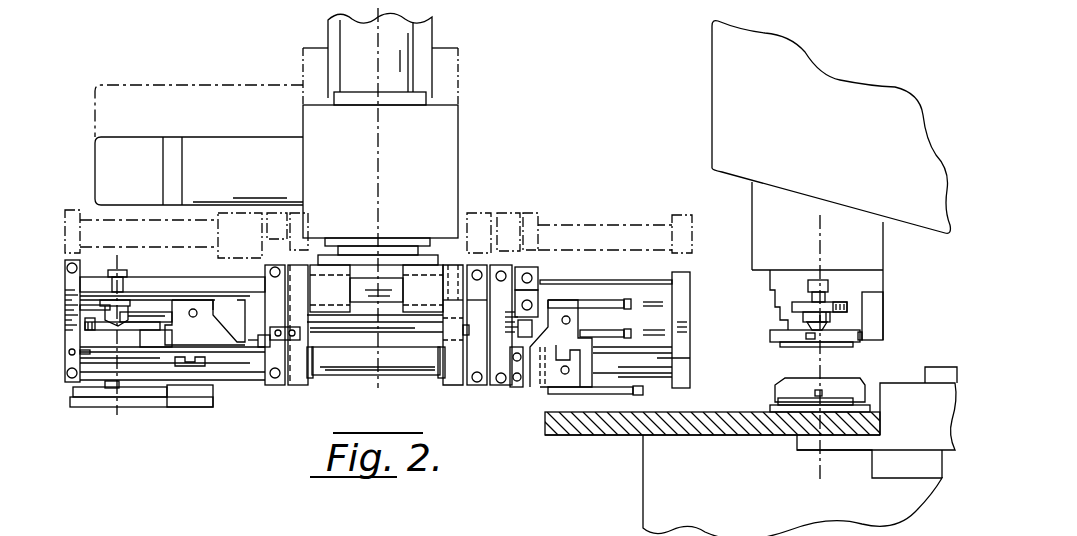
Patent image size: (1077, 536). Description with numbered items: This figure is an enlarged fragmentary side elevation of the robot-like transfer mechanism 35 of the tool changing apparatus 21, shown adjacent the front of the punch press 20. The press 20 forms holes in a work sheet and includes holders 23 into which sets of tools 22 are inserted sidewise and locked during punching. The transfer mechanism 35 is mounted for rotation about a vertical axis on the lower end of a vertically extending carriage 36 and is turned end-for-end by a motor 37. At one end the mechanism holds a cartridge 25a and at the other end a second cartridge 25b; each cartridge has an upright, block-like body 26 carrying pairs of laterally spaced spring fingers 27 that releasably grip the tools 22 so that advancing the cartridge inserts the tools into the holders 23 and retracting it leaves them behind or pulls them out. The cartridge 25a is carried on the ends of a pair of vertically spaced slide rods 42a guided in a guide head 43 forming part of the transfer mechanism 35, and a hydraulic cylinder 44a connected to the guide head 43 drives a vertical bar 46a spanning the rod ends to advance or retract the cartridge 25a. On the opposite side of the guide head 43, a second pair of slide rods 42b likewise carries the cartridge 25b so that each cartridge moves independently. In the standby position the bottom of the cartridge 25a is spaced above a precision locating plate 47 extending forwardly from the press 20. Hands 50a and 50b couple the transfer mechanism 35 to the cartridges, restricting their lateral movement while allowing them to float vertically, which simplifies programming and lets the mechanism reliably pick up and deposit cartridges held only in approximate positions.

The punch press 20 is at (755, 208).
The tool changing apparatus 21 is at (455, 37).
The tools 22 is at (832, 318).
The holders 23 is at (858, 285).
The cartridge 25a is at (543, 408).
The cartridge 25b is at (180, 410).
The body 26 is at (585, 414).
The spring fingers 27 is at (633, 331).
The transfer mechanism 35 is at (476, 255).
The carriage 36 is at (364, 61).
The motor 37 is at (247, 143).
The slide rods 42a is at (360, 282).
The slide rods 42b is at (652, 283).
The guide head 43 is at (423, 280).
The hydraulic cylinder 44a is at (363, 332).
The vertical bar 46a is at (497, 370).
The locating plate 47 is at (637, 437).
The hand 50a is at (575, 318).
The hand 50b is at (210, 338).